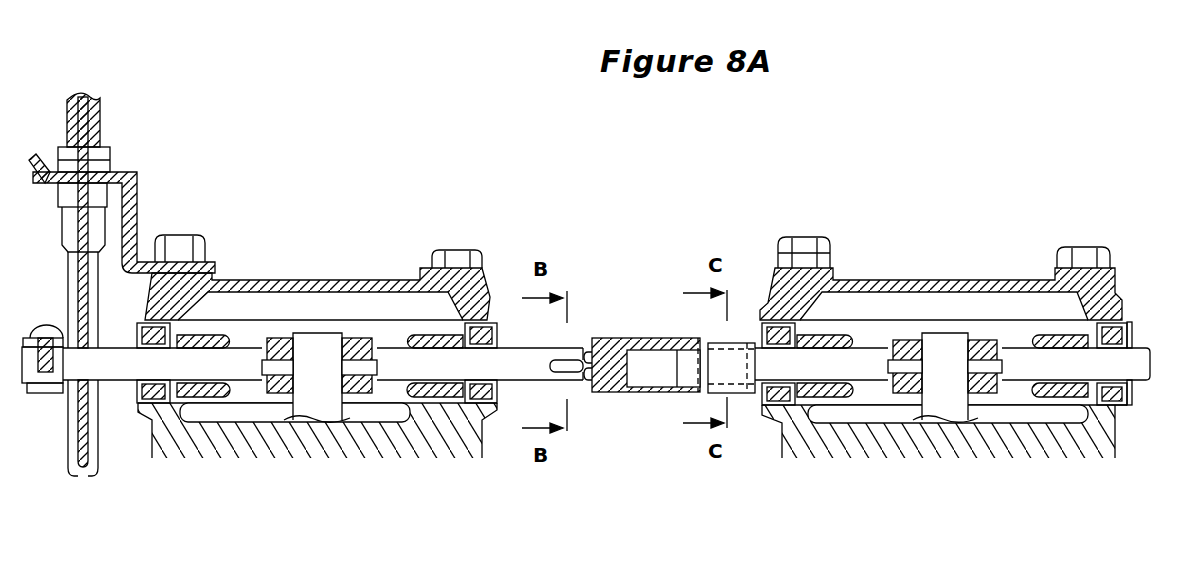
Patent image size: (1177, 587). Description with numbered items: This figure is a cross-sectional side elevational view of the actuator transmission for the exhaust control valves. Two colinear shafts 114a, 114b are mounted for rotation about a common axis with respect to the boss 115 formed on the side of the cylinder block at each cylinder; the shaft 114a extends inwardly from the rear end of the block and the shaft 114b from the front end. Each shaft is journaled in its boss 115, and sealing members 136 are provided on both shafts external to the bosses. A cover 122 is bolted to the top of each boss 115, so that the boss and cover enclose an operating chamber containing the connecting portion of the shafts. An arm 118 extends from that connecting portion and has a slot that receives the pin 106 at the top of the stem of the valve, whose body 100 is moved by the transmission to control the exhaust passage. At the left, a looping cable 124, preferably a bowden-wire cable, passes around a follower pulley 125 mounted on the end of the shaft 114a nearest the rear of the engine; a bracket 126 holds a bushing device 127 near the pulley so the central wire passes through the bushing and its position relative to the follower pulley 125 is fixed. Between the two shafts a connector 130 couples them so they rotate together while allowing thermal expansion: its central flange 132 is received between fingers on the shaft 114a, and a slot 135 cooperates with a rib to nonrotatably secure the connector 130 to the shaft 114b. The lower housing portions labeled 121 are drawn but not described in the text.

The body 100 is at (314, 410).
The pin 106 is at (277, 395).
The shaft 114a is at (148, 417).
The shaft 114b is at (1013, 353).
The boss 115 is at (487, 445).
The arm 118 is at (283, 342).
The housing body 121 is at (403, 408).
The cover 122 is at (338, 280).
The looping cable 124 is at (120, 372).
The follower pulley 125 is at (100, 470).
The bracket 126 is at (135, 181).
The bushing device 127 is at (110, 150).
The connector 130 is at (621, 338).
The central flange 132 is at (578, 375).
The slot 135 is at (655, 384).
The sealing members 136 is at (143, 312).